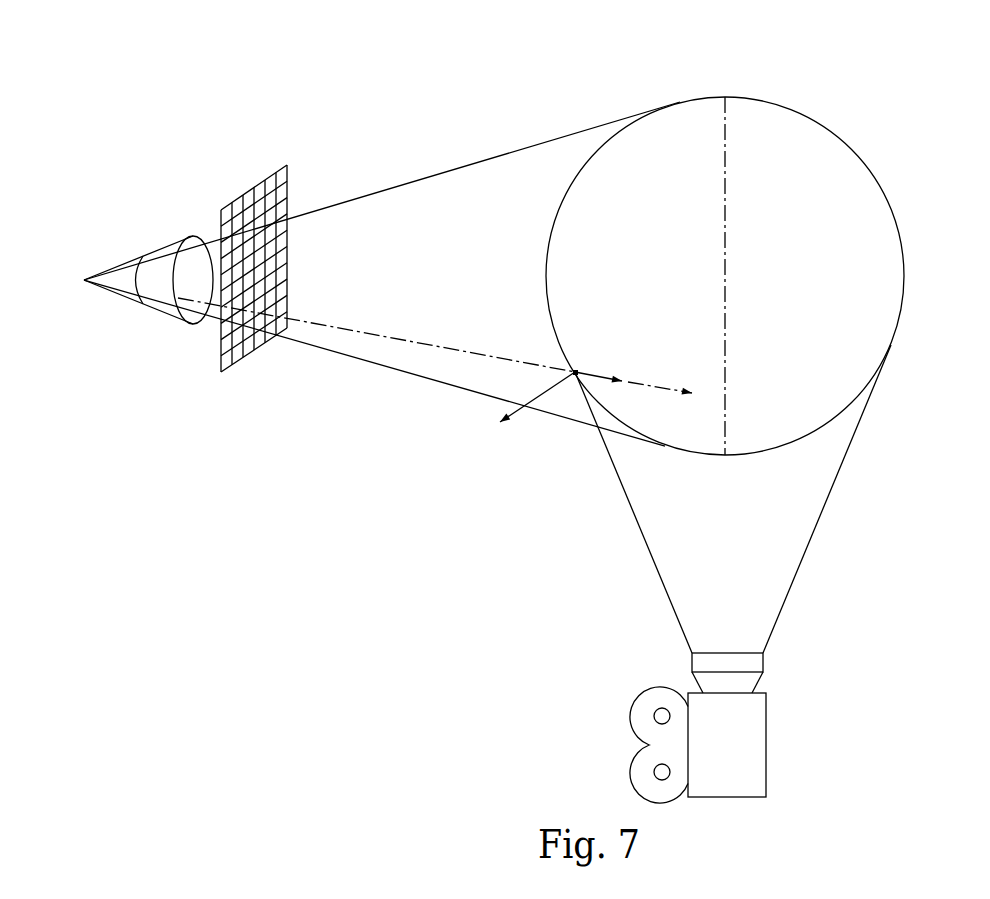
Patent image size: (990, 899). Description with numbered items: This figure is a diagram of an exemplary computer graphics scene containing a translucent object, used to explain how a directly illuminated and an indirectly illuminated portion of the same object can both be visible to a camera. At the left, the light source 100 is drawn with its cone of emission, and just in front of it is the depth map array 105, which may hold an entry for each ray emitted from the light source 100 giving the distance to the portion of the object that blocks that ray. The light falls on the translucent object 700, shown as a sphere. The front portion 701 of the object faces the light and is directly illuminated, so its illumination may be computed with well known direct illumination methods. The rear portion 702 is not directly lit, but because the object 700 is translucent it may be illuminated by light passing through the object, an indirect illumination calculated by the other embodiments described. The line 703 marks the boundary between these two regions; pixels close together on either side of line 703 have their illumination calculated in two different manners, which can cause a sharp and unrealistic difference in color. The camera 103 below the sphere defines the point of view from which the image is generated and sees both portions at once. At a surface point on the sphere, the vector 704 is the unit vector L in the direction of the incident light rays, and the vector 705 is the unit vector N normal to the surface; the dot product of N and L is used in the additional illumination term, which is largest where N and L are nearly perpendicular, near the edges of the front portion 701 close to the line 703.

The light source 100 is at (140, 252).
The array 105 is at (255, 182).
The camera 103 is at (767, 737).
The translucent object 700 is at (903, 268).
The front portion 701 is at (687, 99).
The rear portion 702 is at (822, 120).
The line 703 is at (726, 96).
The vector L 704 is at (603, 373).
The vector N 705 is at (545, 390).